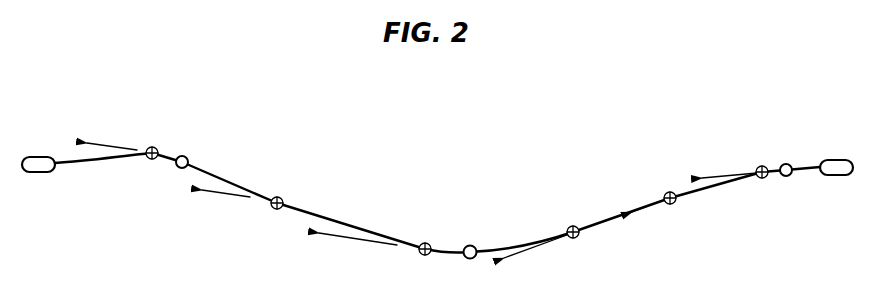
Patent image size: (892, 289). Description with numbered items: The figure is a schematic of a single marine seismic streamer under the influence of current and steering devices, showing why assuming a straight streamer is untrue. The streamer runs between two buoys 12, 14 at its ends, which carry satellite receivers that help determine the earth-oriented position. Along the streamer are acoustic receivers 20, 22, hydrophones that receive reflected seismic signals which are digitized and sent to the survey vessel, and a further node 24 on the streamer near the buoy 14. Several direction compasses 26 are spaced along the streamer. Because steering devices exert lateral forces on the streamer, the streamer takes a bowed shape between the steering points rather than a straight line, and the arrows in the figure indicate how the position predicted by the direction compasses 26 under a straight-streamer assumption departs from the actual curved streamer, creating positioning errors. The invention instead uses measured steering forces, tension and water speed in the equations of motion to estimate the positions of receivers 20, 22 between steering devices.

The buoy 12 is at (37, 157).
The buoy 14 is at (838, 158).
The acoustic receiver 20 is at (186, 155).
The acoustic receiver 22 is at (476, 245).
The third intermediate node 24 is at (785, 163).
The direction compass 26 is at (150, 147).